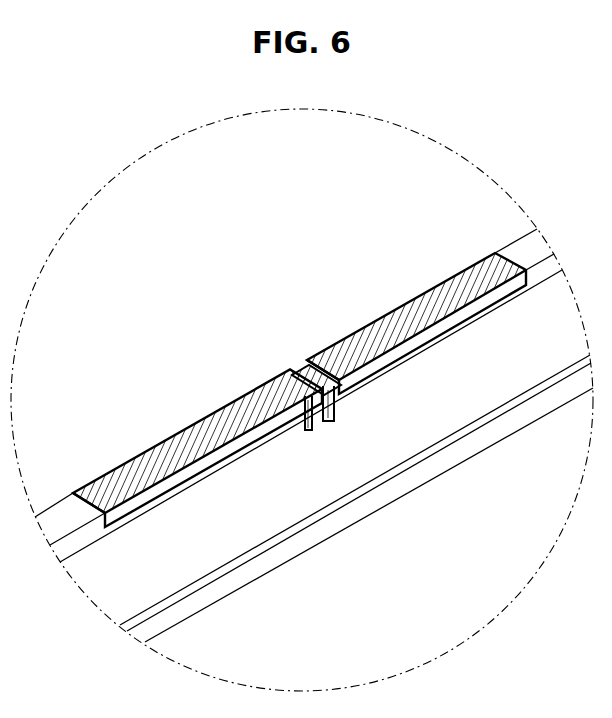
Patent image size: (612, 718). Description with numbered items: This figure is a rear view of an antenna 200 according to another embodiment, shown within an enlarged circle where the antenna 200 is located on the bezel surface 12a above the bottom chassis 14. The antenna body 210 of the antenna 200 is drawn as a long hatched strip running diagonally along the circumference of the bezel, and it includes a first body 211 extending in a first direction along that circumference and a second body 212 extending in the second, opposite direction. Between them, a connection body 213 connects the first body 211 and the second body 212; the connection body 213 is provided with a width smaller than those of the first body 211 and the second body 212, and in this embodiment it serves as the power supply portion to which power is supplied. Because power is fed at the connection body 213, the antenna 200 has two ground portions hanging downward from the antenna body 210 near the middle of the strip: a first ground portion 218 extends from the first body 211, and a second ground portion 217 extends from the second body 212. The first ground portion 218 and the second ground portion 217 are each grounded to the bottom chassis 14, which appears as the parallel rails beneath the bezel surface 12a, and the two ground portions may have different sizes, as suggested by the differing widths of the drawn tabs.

The bottom chassis 14 is at (100, 583).
The bezel surface 12a is at (62, 513).
The antenna 200 is at (288, 390).
The antenna body 210 is at (288, 390).
The first body 211 is at (198, 440).
The second body 212 is at (427, 312).
The connection body 213 is at (295, 365).
The second ground portion 217 is at (335, 410).
The first ground portion 218 is at (308, 431).